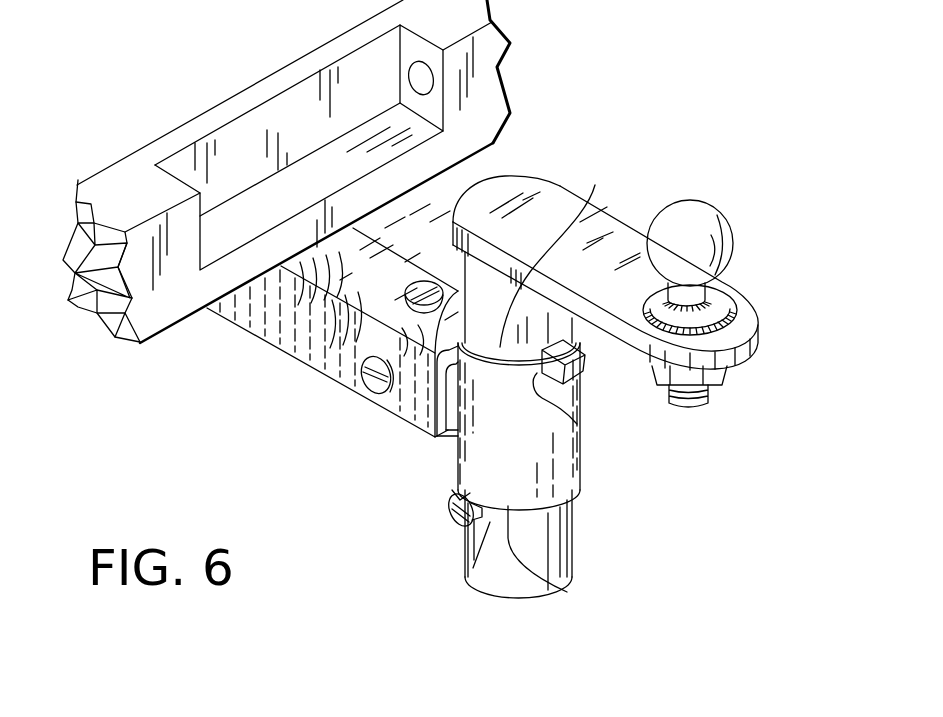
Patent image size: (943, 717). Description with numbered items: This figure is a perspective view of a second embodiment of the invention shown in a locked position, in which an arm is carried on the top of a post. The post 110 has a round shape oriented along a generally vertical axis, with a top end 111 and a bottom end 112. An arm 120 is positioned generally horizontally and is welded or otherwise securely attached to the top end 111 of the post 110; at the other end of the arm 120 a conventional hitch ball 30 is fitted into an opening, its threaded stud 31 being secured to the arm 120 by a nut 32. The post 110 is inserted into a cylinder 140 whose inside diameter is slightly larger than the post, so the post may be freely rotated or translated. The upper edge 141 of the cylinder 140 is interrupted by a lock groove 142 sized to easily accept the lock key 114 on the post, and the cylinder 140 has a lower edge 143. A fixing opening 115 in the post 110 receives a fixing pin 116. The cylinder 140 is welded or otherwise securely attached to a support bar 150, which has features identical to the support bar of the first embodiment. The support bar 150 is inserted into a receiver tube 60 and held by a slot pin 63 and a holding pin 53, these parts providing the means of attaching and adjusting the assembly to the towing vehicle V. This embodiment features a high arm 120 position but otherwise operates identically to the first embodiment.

The towing vehicle V is at (487, 80).
The receiver tube 60 is at (262, 341).
The slot pin 63 is at (438, 276).
The holding pin 53 is at (368, 394).
The support bar 150 is at (453, 440).
The post 110 is at (574, 507).
The top end 111 is at (493, 197).
The bottom end 112 is at (520, 598).
The lower edge 143 is at (571, 588).
The cylinder 140 is at (583, 462).
The upper edge 141 is at (595, 185).
The lock groove 142 is at (578, 424).
The lock key 114 is at (582, 352).
The fixing pin 116 is at (452, 512).
The fixing opening 115 is at (483, 546).
The arm 120 is at (620, 217).
The hitch ball 30 is at (703, 207).
The threaded stud 31 is at (710, 398).
The nut 32 is at (727, 370).